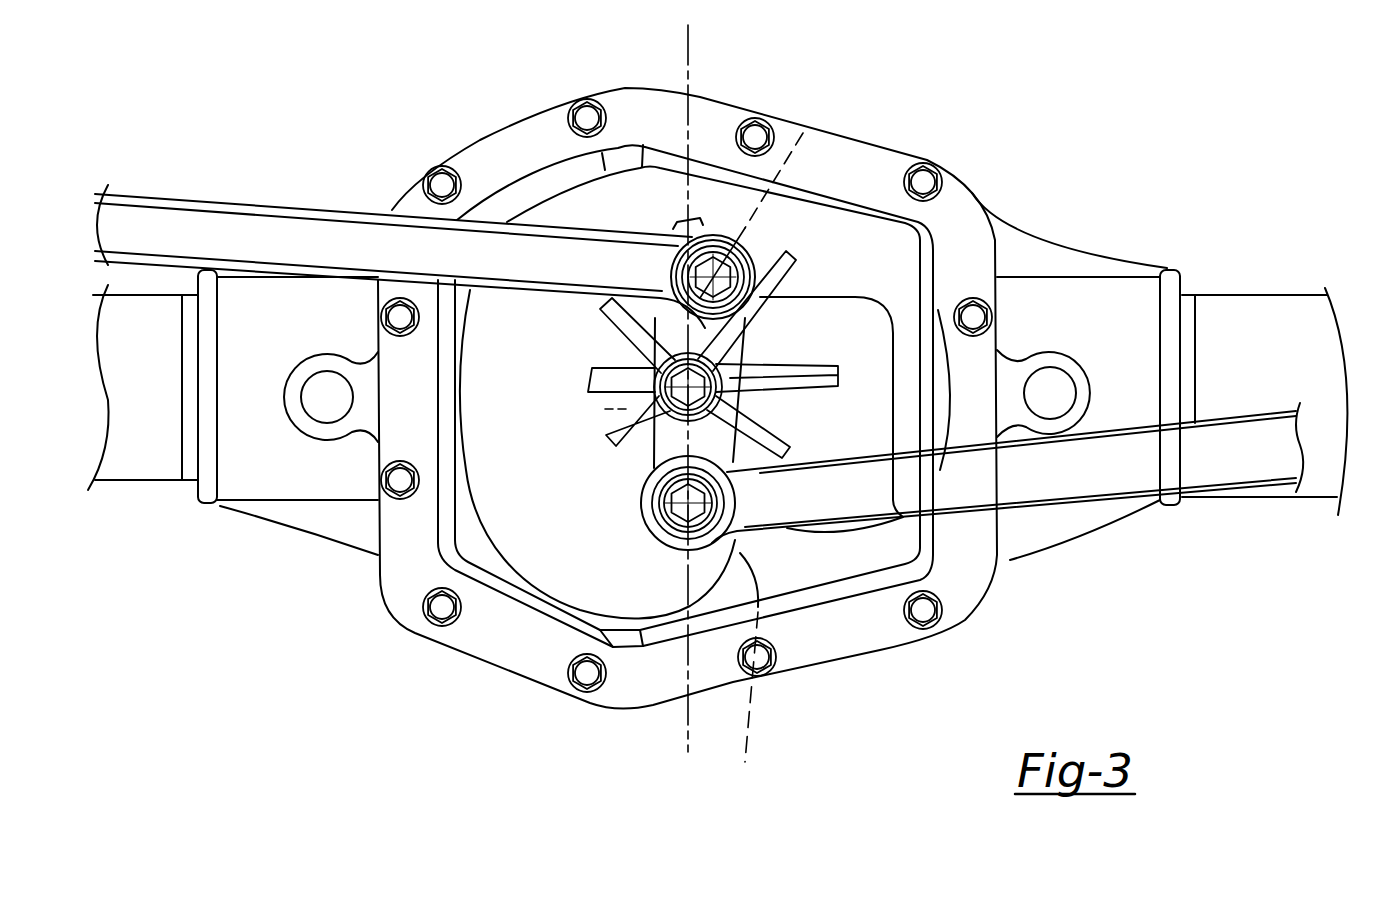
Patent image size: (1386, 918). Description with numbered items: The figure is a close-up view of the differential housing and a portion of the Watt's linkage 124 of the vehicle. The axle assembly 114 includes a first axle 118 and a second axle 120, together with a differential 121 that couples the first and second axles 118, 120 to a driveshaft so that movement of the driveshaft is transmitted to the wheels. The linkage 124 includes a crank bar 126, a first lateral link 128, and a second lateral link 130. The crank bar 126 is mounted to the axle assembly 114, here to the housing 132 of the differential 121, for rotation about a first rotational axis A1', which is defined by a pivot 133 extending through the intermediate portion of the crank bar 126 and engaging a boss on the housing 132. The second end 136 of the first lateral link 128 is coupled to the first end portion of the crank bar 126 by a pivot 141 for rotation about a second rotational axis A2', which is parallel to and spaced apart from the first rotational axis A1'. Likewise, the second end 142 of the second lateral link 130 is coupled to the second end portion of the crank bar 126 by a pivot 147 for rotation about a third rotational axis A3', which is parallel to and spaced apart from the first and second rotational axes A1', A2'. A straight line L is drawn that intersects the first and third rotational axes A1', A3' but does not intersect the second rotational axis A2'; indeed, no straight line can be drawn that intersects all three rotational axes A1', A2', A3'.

The axle assembly 114 is at (1192, 283).
The first axle 118 is at (122, 470).
The second axle 120 is at (1326, 490).
The differential 121 is at (503, 118).
The linkage 124 is at (584, 218).
The crank bar 126 is at (693, 452).
The first lateral link 128 is at (270, 230).
The second lateral link 130 is at (1097, 480).
The housing 132 is at (490, 633).
The pivot 133 is at (703, 368).
The second end 136 is at (717, 238).
The pivot 141 is at (733, 318).
The second end 142 is at (667, 540).
The pivot 147 is at (663, 490).
The straight line L is at (688, 738).
The first rotational axis A1' is at (589, 407).
The second rotational axis A2' is at (799, 194).
The third rotational axis A3' is at (745, 704).